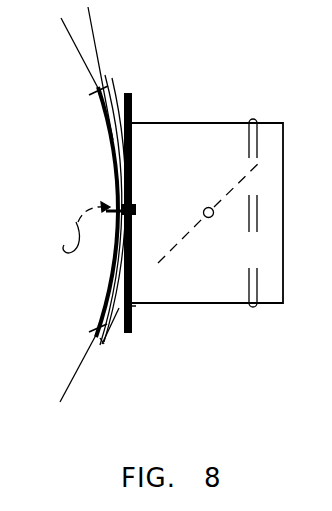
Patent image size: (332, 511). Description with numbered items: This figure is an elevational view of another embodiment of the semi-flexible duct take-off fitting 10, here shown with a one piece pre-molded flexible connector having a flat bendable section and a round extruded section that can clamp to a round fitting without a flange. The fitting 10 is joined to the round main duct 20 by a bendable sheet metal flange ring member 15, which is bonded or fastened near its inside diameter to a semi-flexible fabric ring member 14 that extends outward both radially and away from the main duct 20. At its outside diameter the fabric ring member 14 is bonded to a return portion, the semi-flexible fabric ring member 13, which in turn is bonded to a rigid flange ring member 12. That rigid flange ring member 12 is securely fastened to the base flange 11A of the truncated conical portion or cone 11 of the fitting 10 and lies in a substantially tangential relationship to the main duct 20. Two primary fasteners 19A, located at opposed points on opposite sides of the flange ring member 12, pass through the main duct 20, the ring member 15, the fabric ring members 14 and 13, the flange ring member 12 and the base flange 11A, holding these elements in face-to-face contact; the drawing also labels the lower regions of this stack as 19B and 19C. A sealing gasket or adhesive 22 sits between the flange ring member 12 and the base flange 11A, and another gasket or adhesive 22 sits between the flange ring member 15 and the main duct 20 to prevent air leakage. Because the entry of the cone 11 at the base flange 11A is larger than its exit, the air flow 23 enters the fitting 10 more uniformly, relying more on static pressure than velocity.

The semi-flexible duct take-off fitting 10 is at (273, 318).
The truncated conical portion 11 is at (192, 123).
The base flange 11A is at (129, 307).
The rigid flange ring member 12 is at (125, 93).
The semi-flexible fabric ring member 13 is at (112, 78).
The semi-flexible fabric ring member 14 is at (116, 140).
The bendable sheet metal flange ring member 15 is at (88, 7).
The primary fasteners 19A is at (134, 211).
The lower strip end 19B is at (99, 340).
The lower plate end 19C is at (130, 318).
The round main duct 20 is at (70, 380).
The sealing gasket or adhesive 22 is at (127, 333).
The air flow 23 is at (81, 227).